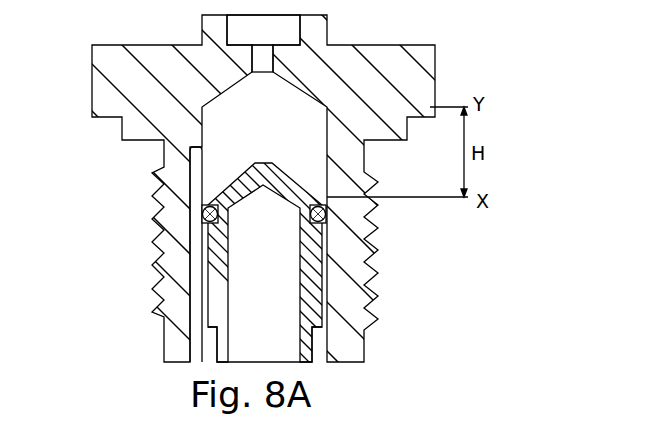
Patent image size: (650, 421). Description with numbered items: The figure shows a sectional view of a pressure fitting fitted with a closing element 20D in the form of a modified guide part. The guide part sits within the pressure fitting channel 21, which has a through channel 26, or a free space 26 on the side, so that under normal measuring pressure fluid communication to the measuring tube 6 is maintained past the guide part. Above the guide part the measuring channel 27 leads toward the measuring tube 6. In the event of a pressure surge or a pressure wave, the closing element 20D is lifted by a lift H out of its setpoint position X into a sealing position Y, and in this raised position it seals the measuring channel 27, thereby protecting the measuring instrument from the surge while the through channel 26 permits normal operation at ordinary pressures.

The measuring tube 6 is at (287, 25).
The measuring channel 27 is at (263, 55).
The through channel 26 is at (197, 310).
The closing element 20D is at (216, 254).
The pressure fitting channel 21 is at (317, 355).